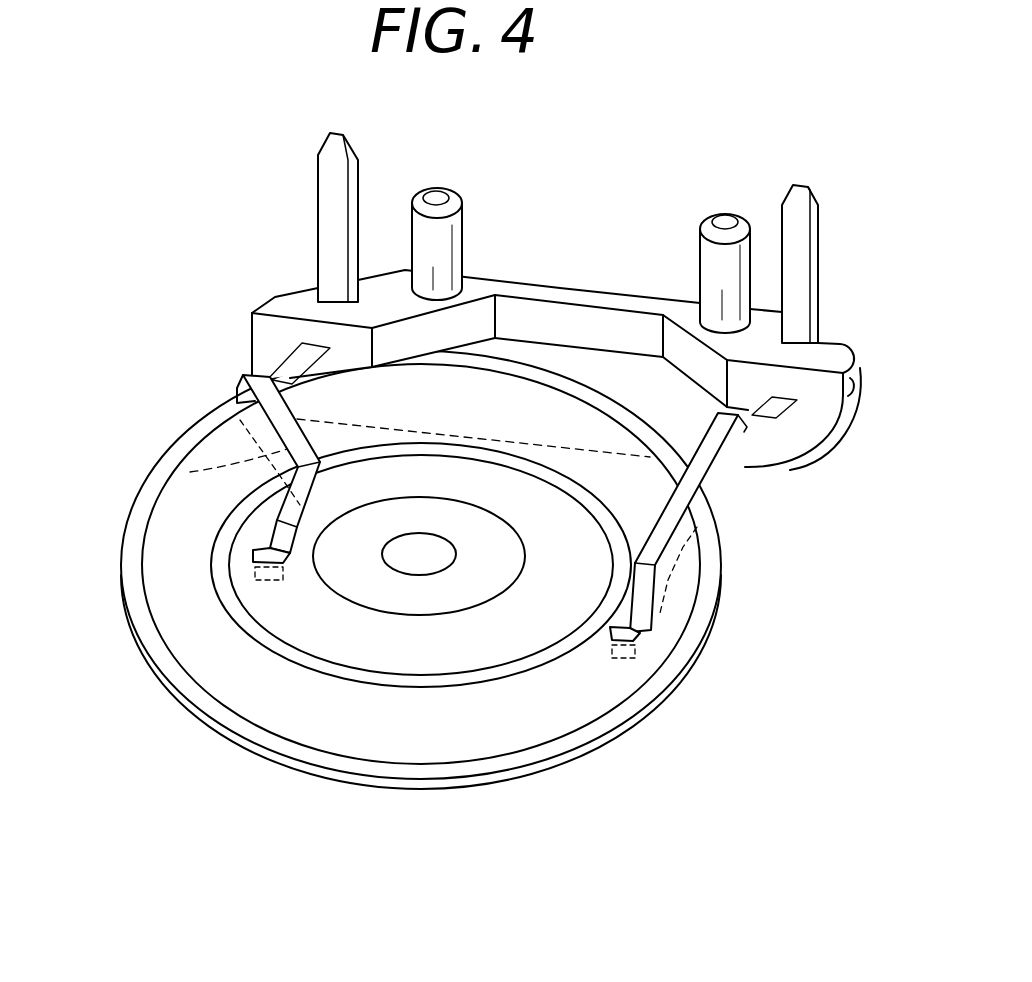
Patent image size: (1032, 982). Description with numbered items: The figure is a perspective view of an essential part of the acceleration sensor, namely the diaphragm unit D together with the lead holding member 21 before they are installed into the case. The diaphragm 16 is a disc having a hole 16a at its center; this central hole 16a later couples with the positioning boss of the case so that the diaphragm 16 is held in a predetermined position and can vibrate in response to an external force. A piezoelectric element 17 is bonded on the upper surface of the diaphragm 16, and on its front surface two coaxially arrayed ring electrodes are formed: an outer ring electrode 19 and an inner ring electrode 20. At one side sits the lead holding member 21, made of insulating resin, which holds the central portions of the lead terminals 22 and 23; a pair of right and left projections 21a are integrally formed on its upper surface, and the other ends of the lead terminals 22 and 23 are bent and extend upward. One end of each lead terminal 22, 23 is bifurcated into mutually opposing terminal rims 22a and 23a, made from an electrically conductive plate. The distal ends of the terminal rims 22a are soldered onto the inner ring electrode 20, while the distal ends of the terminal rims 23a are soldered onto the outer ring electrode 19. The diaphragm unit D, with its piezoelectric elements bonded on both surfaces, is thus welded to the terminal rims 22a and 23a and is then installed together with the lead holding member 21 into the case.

The diaphragm 16 is at (200, 714).
The hole 16a is at (405, 574).
The piezoelectric element 17 is at (227, 600).
The outer ring electrode 19 is at (160, 540).
The inner ring electrode 20 is at (332, 636).
The lead holding member 21 is at (562, 290).
The projection 21a is at (467, 220).
The lead terminal 22 is at (325, 207).
The terminal rim 22a is at (243, 463).
The lead terminal 23 is at (808, 240).
The terminal rim 23a is at (697, 483).
The diaphragm unit D is at (632, 728).